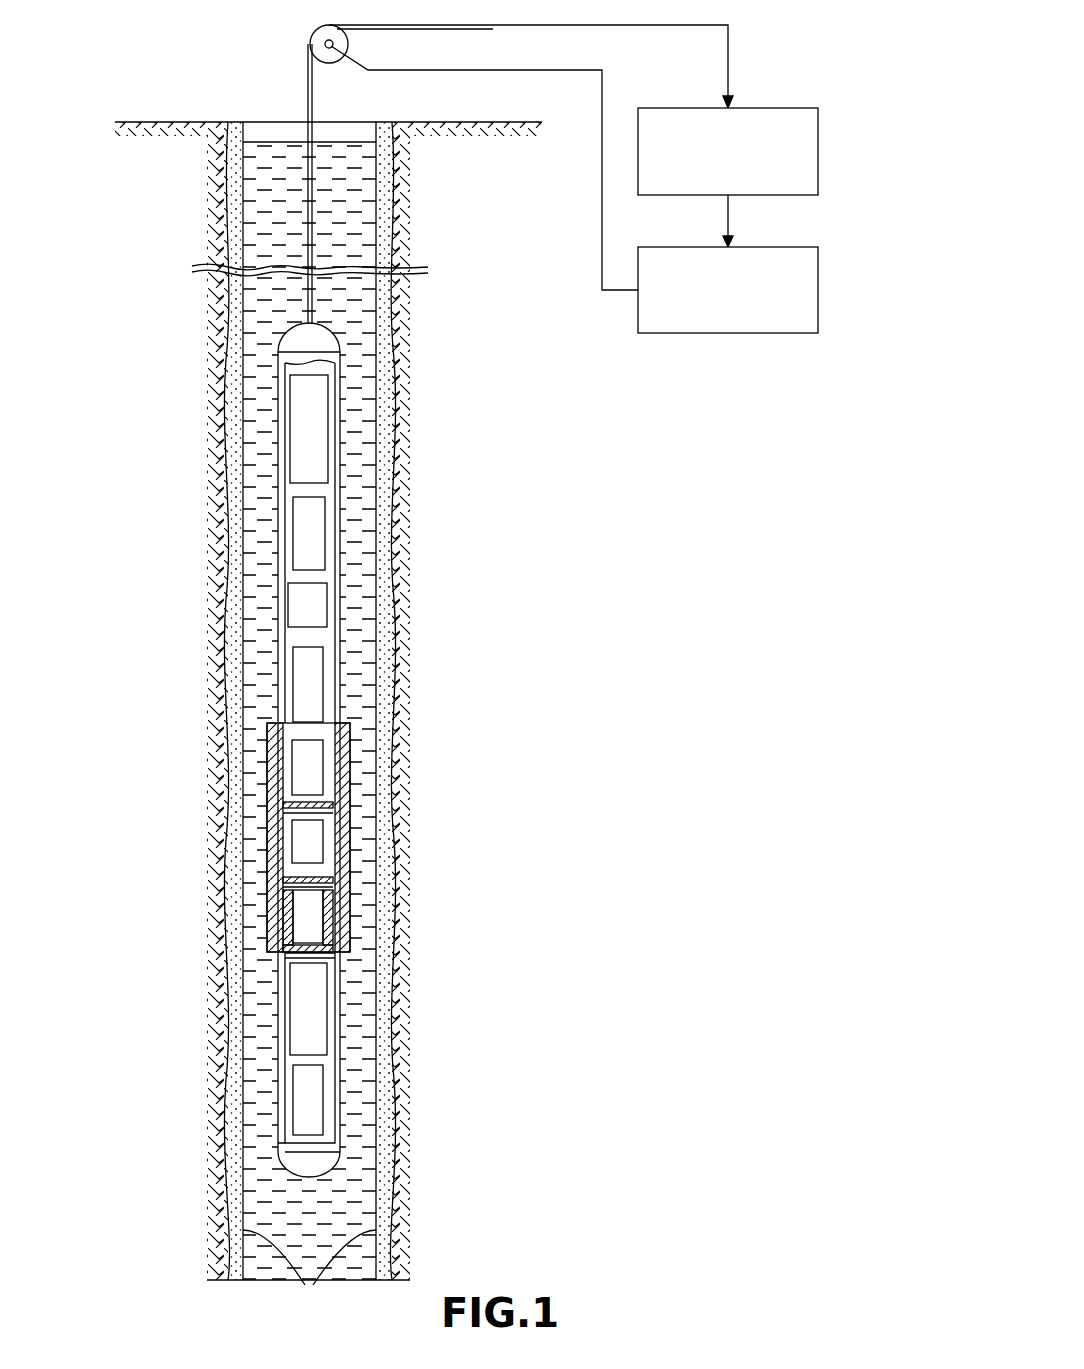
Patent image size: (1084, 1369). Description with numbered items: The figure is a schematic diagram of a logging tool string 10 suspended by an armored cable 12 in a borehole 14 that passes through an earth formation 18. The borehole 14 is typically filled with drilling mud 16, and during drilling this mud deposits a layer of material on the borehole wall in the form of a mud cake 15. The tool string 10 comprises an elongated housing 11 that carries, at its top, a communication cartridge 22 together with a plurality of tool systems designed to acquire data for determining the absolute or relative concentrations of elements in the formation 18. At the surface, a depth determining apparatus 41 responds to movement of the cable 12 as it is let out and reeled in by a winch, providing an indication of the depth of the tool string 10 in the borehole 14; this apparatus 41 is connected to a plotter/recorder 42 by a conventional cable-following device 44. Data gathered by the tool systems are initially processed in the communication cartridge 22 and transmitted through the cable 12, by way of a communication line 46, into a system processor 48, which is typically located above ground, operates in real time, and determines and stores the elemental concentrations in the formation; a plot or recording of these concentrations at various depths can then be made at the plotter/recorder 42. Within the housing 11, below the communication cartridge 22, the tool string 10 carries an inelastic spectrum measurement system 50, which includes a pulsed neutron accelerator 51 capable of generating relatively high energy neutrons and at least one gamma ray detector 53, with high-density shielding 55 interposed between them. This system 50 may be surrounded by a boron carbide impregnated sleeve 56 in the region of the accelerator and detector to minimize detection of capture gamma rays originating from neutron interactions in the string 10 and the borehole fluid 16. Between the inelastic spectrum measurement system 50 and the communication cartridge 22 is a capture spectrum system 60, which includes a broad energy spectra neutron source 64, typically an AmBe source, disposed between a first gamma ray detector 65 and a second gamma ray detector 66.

The logging tool string 10 is at (307, 750).
The elongated housing 11 is at (340, 587).
The armored cable 12 is at (313, 217).
The borehole 14 is at (271, 118).
The mud cake 15 is at (309, 1275).
The drilling mud 16 is at (257, 182).
The earth formation 18 is at (222, 520).
The communication cartridge 22 is at (298, 420).
The depth determining apparatus 41 is at (313, 28).
The plotter/recorder 42 is at (818, 276).
The cable-following device 44 is at (602, 224).
The communication line 46 is at (728, 62).
The system processor 48 is at (818, 138).
The inelastic spectrum measurement system 50 is at (255, 852).
The pulsed neutron accelerator 51 is at (302, 900).
The gamma ray detector 53 is at (302, 830).
The high-density shielding 55 is at (290, 878).
The boron carbide impregnated sleeve 56 is at (268, 942).
The capture spectrum system 60 is at (422, 548).
The broad energy spectra neutron source 64 is at (327, 612).
The first gamma ray detector 65 is at (327, 660).
The second gamma ray detector 66 is at (313, 530).